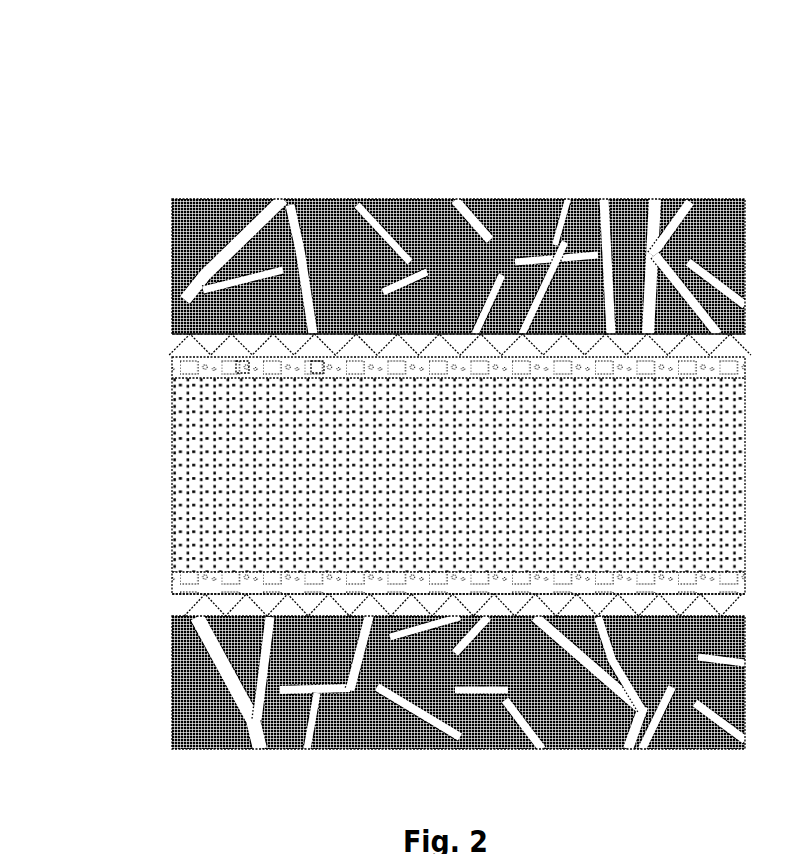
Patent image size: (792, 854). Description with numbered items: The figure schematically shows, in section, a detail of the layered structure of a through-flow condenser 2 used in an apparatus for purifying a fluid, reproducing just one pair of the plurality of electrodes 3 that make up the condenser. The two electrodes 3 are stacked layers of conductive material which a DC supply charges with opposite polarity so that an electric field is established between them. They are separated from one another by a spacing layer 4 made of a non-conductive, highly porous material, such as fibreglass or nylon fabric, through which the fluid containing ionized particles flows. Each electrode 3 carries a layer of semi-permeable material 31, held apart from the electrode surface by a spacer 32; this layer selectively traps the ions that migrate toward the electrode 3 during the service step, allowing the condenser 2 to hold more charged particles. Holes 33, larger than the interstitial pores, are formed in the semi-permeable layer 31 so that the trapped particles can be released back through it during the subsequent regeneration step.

The through-flow condenser 2 is at (177, 175).
The electrodes 3 is at (172, 268).
The layer of semi-permeable material 31 is at (172, 370).
The spacer 32 is at (176, 345).
The holes 33 is at (315, 380).
The spacing layers 4 is at (192, 493).